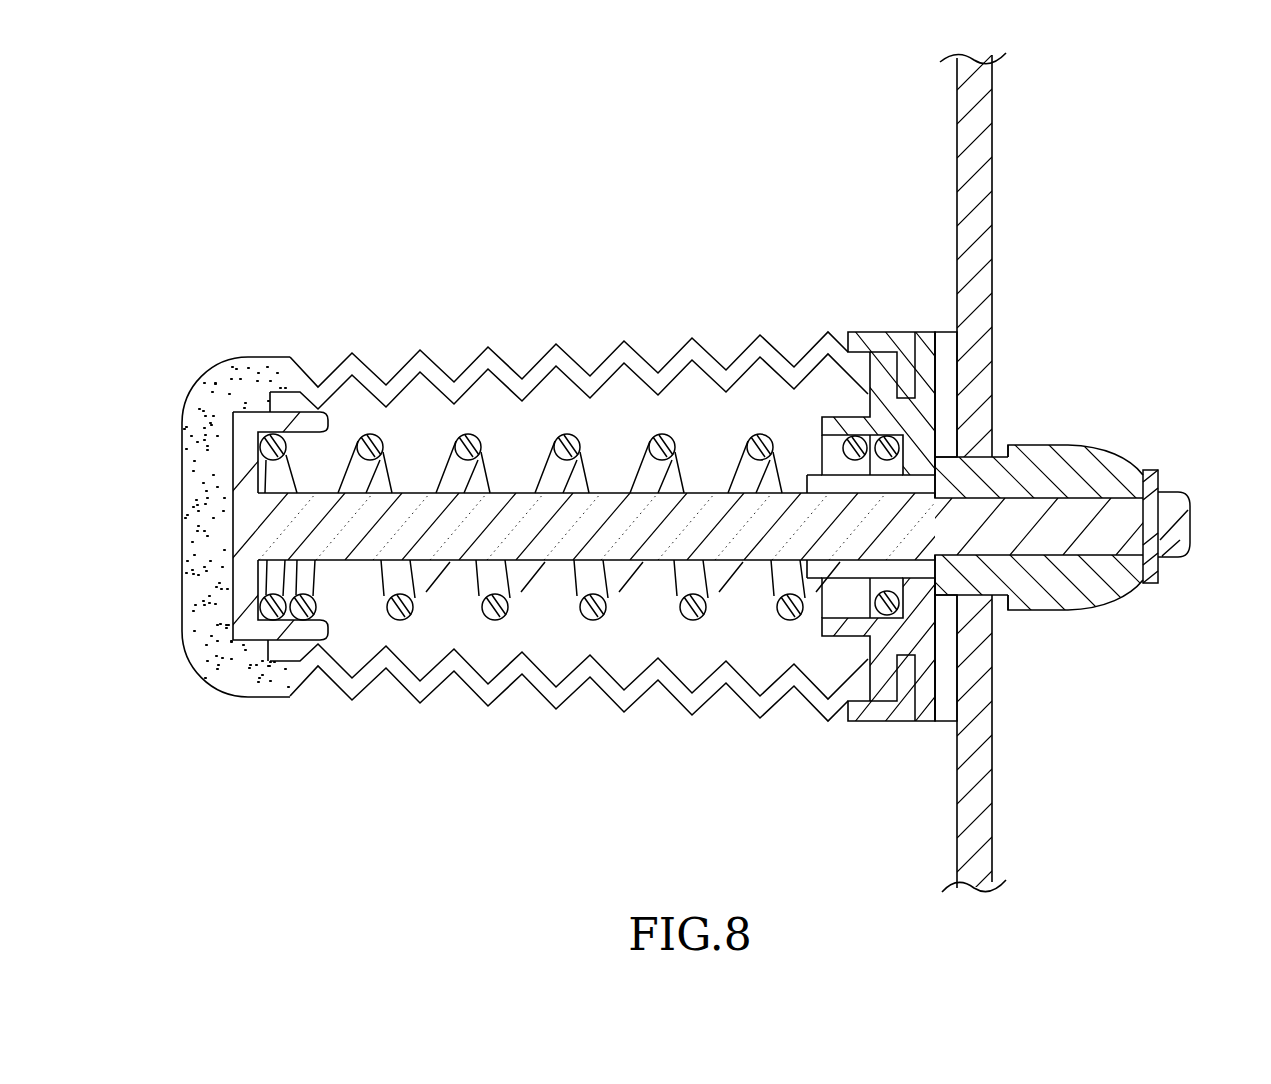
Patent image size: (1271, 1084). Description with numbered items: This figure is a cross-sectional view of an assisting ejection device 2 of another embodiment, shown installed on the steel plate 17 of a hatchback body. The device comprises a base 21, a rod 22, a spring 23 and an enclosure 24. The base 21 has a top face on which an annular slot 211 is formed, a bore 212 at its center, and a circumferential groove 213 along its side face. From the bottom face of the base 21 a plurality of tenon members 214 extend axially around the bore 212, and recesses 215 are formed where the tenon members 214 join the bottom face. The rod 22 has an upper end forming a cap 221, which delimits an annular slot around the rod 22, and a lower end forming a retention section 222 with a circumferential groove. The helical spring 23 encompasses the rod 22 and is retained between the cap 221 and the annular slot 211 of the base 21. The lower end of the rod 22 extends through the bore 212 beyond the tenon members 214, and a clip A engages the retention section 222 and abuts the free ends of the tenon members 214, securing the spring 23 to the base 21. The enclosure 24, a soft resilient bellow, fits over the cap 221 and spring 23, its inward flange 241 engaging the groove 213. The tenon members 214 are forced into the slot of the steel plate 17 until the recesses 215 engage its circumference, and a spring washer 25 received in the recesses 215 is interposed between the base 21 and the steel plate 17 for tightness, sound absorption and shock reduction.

The assisting ejection device 2 is at (128, 250).
The steel plate 17 is at (983, 140).
The base 21 is at (833, 650).
The annular slot 211 is at (818, 430).
The bore 212 is at (770, 490).
The circumferential groove 213 is at (930, 390).
The tenon members 214 is at (1090, 446).
The recesses 215 is at (1003, 442).
The rod 22 is at (510, 493).
The cap 221 is at (192, 570).
The retention section 222 is at (1165, 572).
The spring 23 is at (470, 437).
The enclosure 24 is at (186, 428).
The circumferential flange 241 is at (872, 332).
The spring washer 25 is at (948, 332).
The clip A is at (1172, 483).